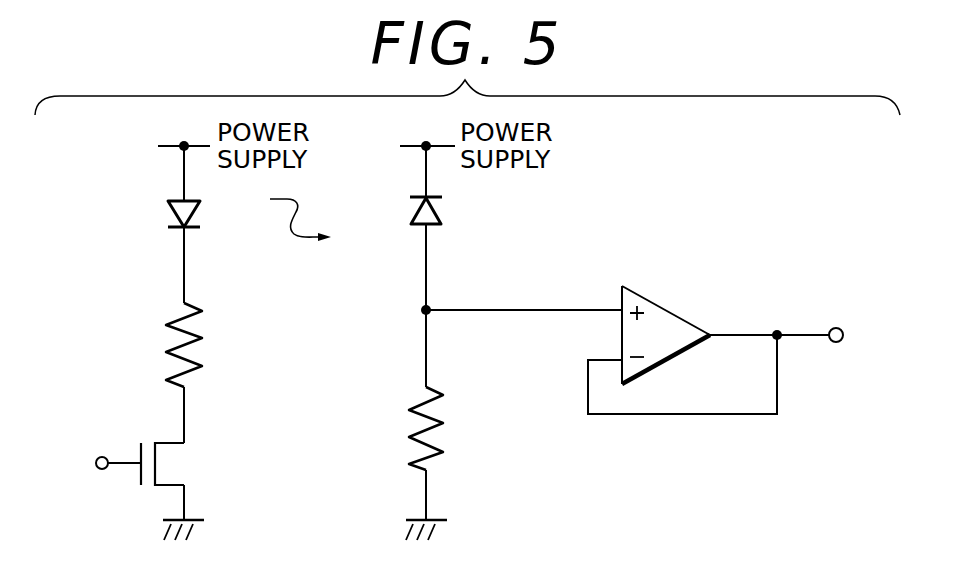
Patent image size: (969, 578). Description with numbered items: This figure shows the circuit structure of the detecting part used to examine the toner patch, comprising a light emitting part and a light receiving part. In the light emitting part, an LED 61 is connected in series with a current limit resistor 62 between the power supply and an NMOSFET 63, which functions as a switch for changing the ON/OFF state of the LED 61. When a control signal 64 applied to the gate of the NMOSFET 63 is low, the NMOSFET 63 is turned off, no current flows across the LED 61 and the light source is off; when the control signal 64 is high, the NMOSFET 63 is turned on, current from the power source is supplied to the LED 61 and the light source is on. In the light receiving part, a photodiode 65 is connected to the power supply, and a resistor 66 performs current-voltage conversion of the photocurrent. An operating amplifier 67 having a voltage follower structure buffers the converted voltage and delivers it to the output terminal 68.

The LED 61 is at (170, 206).
The current limit resistor 62 is at (167, 336).
The NMOSFET 63 is at (187, 459).
The control signal 64 is at (95, 462).
The photodiode 65 is at (440, 218).
The resistor 66 is at (438, 434).
The operating amplifier 67 is at (669, 311).
The output terminal 68 is at (846, 328).